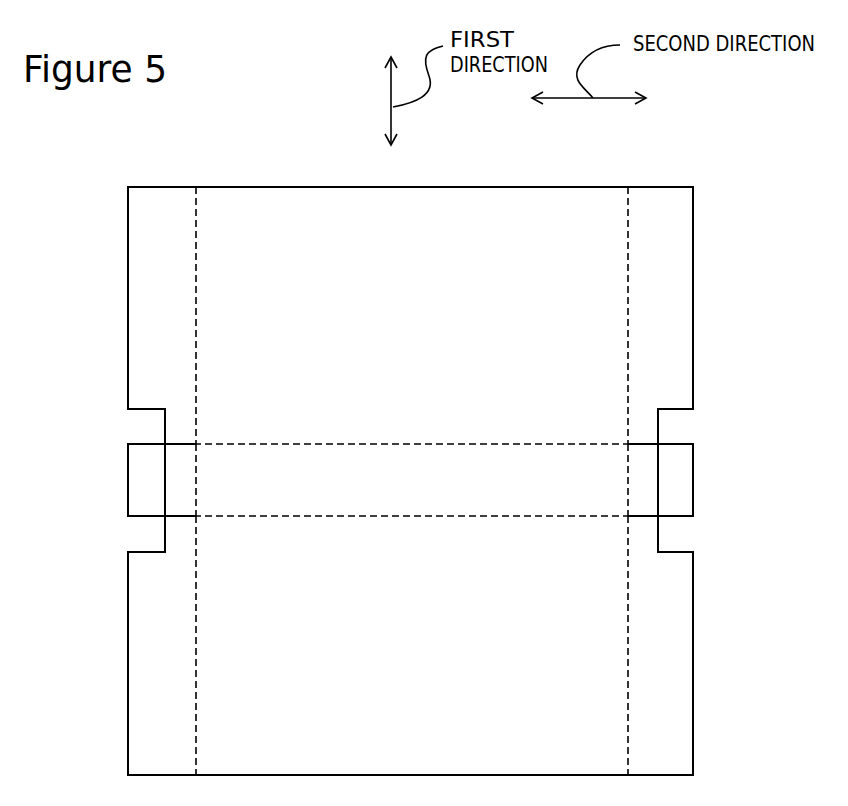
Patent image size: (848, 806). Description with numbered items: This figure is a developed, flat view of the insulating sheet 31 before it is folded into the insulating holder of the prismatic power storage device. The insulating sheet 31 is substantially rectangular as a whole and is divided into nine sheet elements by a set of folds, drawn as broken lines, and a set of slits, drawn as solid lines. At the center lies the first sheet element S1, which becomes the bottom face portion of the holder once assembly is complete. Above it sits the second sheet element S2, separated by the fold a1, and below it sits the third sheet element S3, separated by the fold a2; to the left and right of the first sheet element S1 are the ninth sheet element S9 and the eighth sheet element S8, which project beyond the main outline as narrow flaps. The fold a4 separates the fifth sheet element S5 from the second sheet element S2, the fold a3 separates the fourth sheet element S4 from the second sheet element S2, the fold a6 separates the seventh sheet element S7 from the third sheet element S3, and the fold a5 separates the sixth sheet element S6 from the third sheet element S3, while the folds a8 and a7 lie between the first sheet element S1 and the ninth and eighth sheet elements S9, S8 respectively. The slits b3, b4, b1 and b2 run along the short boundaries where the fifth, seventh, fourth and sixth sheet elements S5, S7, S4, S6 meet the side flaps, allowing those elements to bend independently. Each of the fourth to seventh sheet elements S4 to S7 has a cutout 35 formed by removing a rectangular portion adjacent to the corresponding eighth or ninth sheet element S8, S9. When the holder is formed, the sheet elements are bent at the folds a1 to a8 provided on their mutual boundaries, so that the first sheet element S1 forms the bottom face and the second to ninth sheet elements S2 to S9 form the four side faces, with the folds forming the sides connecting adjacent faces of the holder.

The insulating sheet 31 is at (690, 157).
The cutout 35 is at (140, 412).
The fold a1 is at (383, 443).
The fold a2 is at (345, 516).
The fold a3 is at (628, 322).
The fold a4 is at (194, 317).
The fold a5 is at (628, 648).
The fold a6 is at (197, 683).
The fold a7 is at (628, 462).
The fold a8 is at (197, 490).
The slit b1 is at (640, 447).
The slit b2 is at (640, 517).
The slit b3 is at (182, 445).
The slit b4 is at (172, 518).
The first sheet element S1 is at (420, 479).
The second sheet element S2 is at (425, 296).
The third sheet element S3 is at (440, 611).
The fourth sheet element S4 is at (665, 311).
The fifth sheet element S5 is at (160, 311).
The sixth sheet element S6 is at (665, 644).
The seventh sheet element S7 is at (168, 644).
The eighth sheet element S8 is at (682, 462).
The ninth sheet element S9 is at (150, 478).